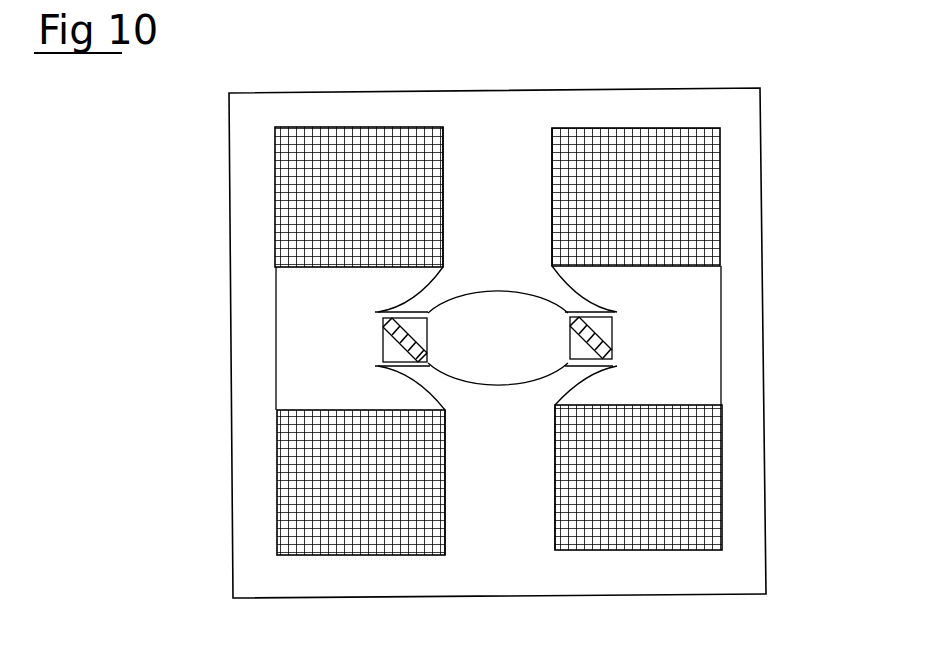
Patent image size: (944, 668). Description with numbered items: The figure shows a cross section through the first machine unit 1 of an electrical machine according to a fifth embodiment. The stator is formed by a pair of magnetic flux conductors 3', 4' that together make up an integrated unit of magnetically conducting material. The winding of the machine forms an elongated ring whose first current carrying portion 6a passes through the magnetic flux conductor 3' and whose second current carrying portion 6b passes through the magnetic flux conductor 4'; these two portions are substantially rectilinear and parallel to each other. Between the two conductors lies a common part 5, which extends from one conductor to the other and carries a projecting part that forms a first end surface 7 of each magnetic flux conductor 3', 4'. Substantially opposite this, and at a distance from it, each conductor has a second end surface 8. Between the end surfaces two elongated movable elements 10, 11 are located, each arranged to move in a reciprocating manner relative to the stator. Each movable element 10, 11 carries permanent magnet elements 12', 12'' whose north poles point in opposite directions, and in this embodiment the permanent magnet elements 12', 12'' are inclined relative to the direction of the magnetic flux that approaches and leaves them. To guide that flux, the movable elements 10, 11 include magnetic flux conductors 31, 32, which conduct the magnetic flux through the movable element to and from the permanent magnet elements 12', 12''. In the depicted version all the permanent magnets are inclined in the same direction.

The first machine unit 1 is at (752, 58).
The magnetic flux conductor 3' is at (310, 348).
The magnetic flux conductor 4' is at (673, 337).
The common part 5 is at (484, 160).
The first current carrying portion 6a is at (297, 193).
The second current carrying portion 6b is at (690, 185).
The first end surface 7 is at (430, 370).
The second end surface 8 is at (378, 313).
The movable element 10 is at (385, 330).
The movable element 11 is at (612, 348).
The permanent magnet element 12' is at (378, 341).
The permanent magnet element 12'' is at (654, 338).
The magnetic flux conductor 31 is at (385, 356).
The magnetic flux conductor 32 is at (428, 328).